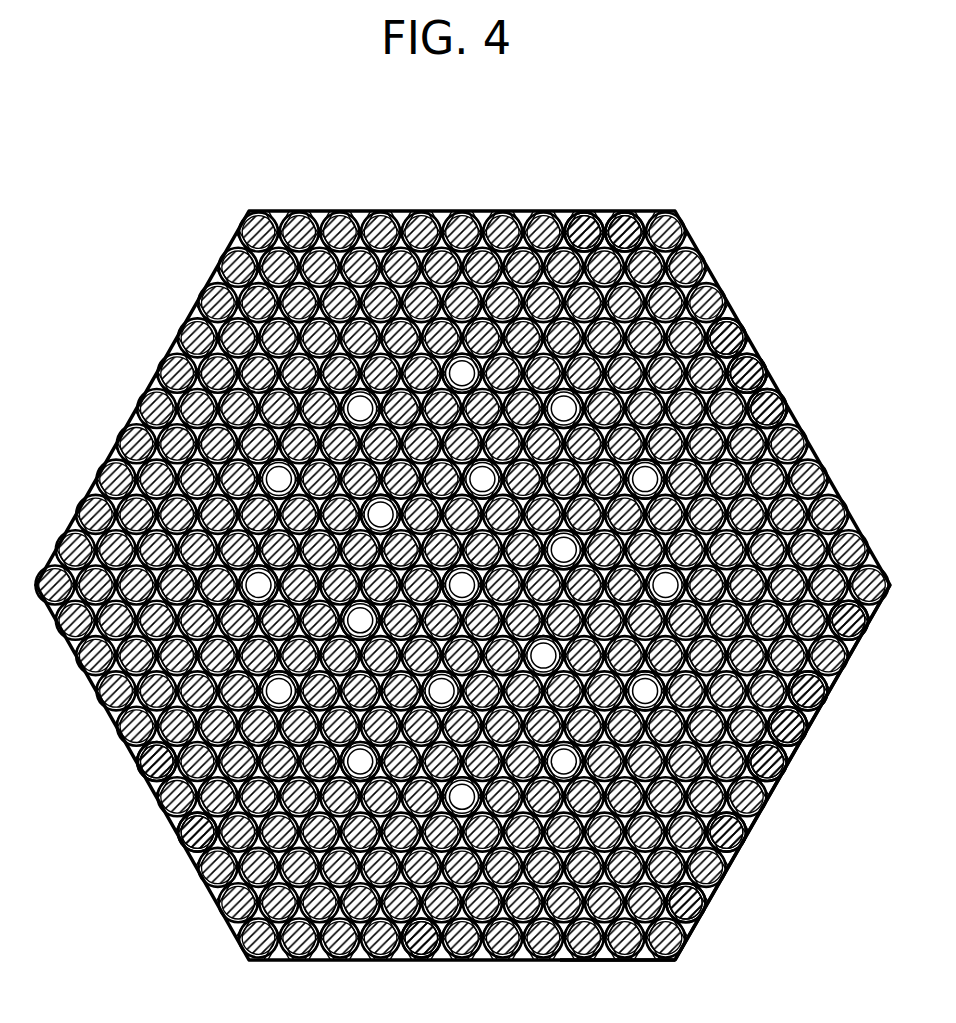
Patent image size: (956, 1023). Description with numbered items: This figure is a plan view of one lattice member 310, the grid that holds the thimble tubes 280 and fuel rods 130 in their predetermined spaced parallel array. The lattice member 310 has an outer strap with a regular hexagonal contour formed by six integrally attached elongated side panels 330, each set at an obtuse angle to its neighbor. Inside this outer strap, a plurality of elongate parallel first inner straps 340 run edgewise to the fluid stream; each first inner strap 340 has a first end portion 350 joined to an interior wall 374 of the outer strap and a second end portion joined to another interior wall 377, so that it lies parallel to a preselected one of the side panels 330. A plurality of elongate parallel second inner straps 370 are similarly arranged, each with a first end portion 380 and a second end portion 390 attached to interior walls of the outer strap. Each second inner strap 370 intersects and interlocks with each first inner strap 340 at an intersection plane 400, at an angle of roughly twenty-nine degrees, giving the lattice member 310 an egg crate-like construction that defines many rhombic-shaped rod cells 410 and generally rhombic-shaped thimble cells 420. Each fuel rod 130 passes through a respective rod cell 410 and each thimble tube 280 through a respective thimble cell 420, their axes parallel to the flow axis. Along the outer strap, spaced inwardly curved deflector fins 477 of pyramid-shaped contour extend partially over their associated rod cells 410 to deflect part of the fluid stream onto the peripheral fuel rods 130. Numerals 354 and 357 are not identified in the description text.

The lattice member 310 is at (198, 224).
The interior wall 374 is at (573, 213).
The first end portion 380 is at (625, 213).
The intersection plane 400 is at (737, 327).
The second inner strap 370 is at (762, 370).
The strap joint 354 is at (787, 409).
The first end portion 350 is at (822, 470).
The second end portion 390 is at (856, 646).
The interior wall 377 is at (826, 703).
The thimble cell 420 is at (806, 738).
The first inner strap 340 is at (780, 783).
The side panel 330 is at (752, 832).
The rod cell 410 is at (714, 895).
The dimple 357 is at (605, 966).
The deflector fin 477 is at (372, 962).
The fuel rod 130 is at (188, 850).
The thimble tube 280 is at (132, 758).